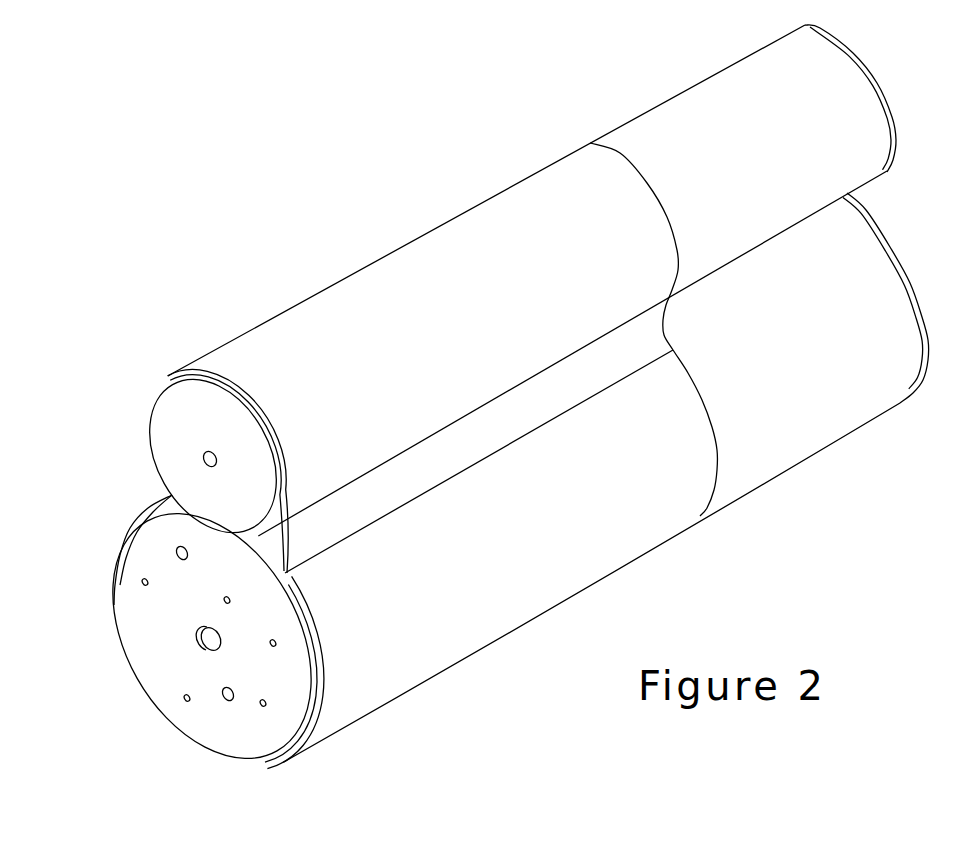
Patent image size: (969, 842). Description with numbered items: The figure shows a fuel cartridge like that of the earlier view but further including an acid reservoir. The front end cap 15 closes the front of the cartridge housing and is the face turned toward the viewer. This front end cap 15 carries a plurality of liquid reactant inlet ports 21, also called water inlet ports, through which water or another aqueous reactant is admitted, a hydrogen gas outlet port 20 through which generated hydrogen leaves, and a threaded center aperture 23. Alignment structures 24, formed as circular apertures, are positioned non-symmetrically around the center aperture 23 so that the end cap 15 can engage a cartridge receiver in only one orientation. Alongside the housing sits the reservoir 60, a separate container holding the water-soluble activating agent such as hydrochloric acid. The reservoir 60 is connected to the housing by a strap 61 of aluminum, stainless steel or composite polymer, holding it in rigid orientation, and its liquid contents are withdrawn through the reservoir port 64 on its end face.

The front end cap 15 is at (127, 630).
The hydrogen gas outlet port 20 is at (213, 593).
The liquid reactant inlet ports 21 is at (130, 579).
The threaded center aperture 23 is at (192, 648).
The alignment structures 24 is at (167, 540).
The reservoir 60 is at (510, 299).
The strap 61 is at (521, 456).
The reservoir port 64 is at (191, 446).